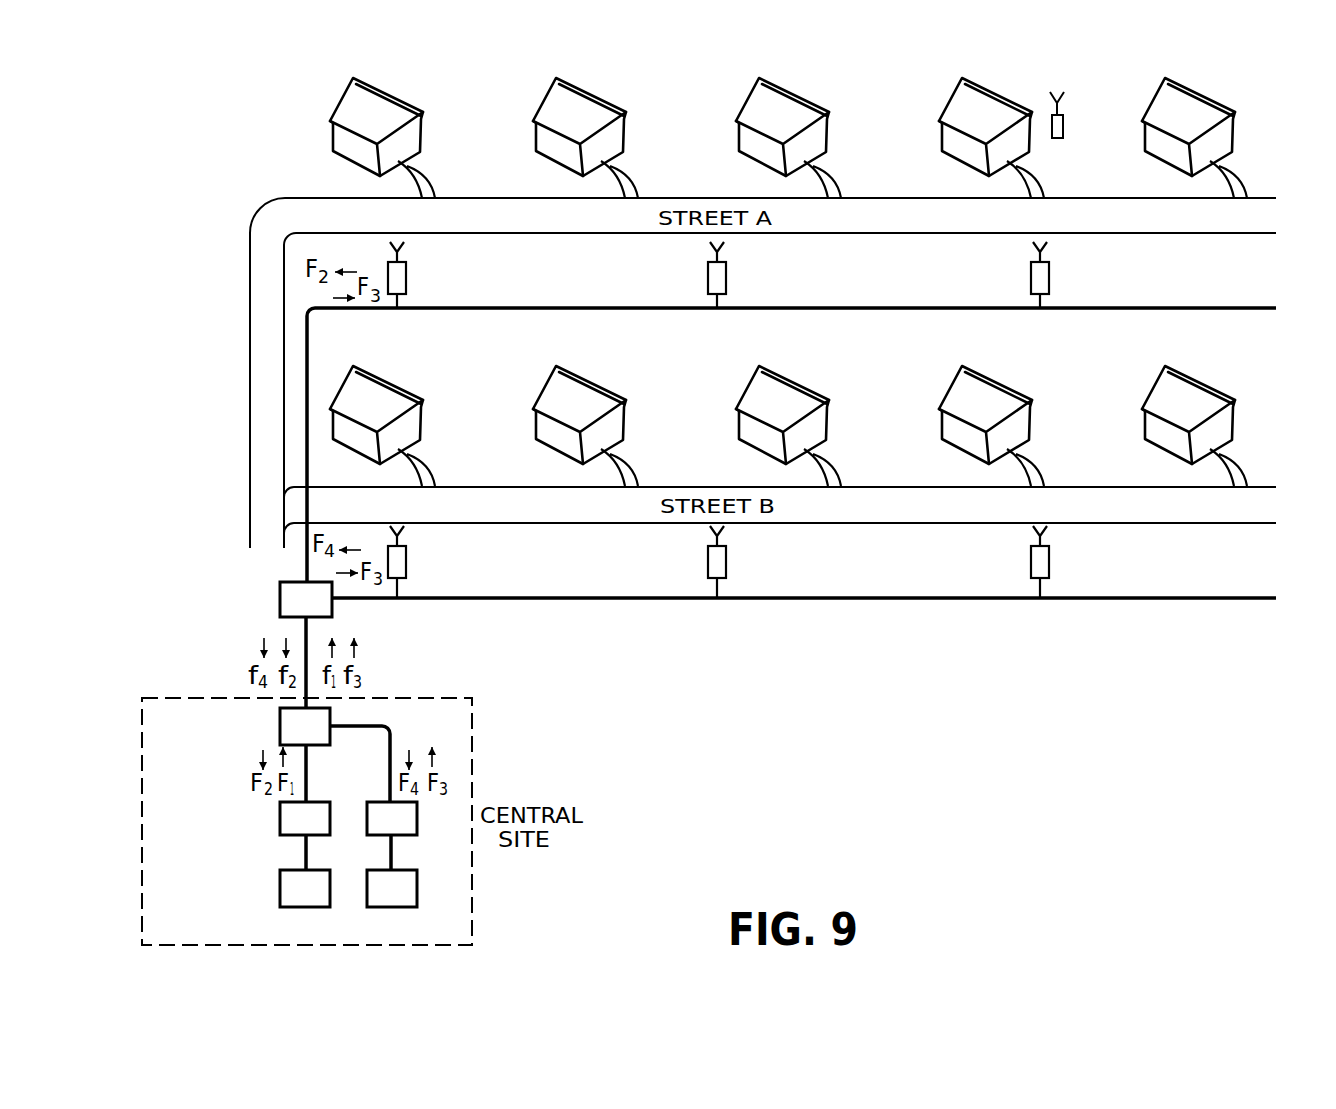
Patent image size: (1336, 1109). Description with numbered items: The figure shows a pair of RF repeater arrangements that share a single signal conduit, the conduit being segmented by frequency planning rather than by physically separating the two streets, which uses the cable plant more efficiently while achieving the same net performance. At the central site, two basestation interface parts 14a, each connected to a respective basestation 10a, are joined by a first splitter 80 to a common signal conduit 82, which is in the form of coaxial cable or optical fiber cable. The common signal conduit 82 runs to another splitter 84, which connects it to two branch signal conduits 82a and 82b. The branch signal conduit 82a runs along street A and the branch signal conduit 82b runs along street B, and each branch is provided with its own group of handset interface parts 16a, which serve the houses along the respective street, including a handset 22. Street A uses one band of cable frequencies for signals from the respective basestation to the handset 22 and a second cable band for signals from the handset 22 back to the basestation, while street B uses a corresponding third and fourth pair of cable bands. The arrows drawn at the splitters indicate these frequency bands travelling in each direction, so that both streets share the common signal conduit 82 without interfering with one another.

The handset 22 is at (1063, 127).
The handset interface part 16a is at (753, 420).
The branch signal conduit 82a is at (548, 308).
The branch signal conduit 82b is at (603, 598).
The common signal conduit 82 is at (303, 626).
The splitter 84 is at (332, 607).
The first splitter 80 is at (330, 713).
The basestation interface part 14a is at (280, 822).
The basestation 10a is at (280, 888).